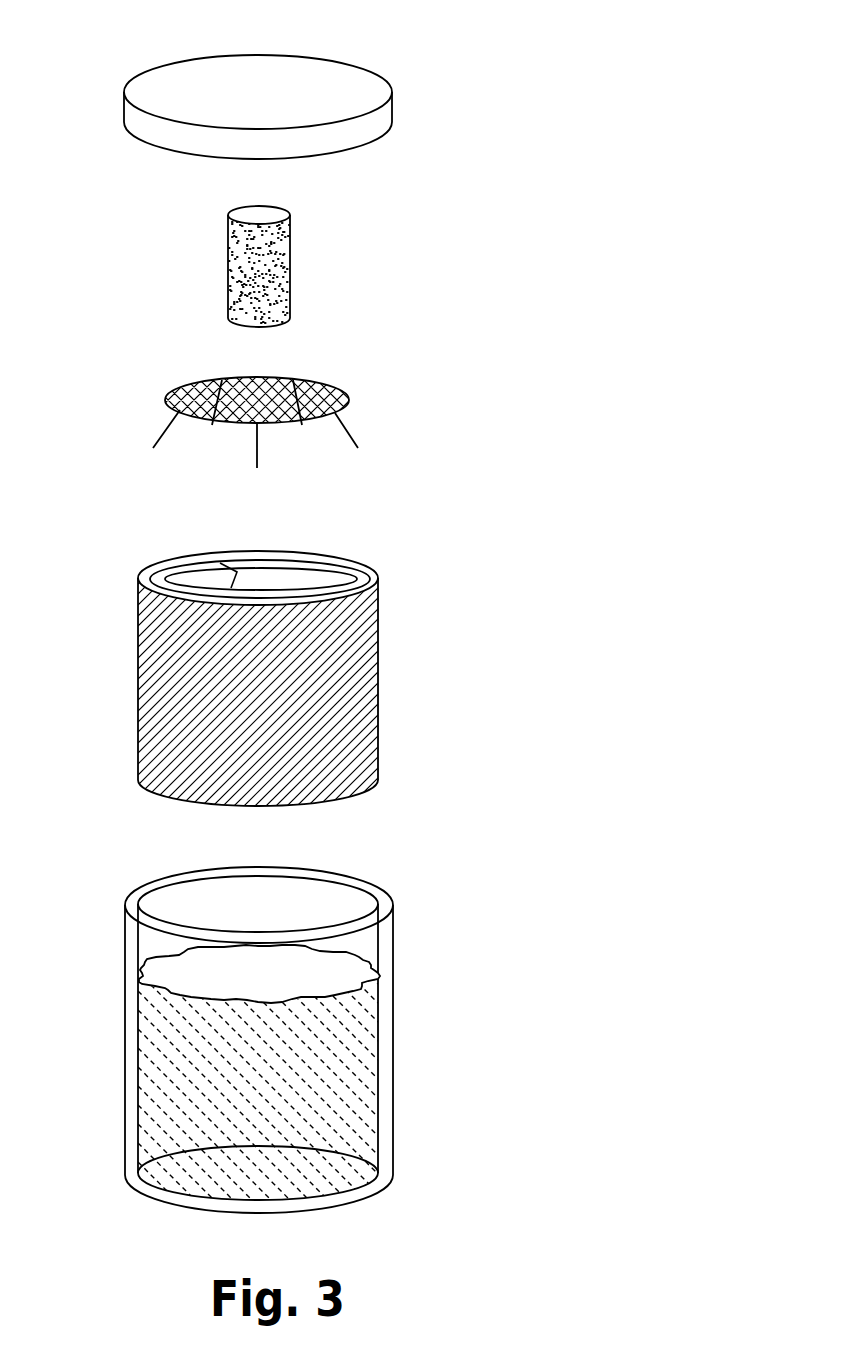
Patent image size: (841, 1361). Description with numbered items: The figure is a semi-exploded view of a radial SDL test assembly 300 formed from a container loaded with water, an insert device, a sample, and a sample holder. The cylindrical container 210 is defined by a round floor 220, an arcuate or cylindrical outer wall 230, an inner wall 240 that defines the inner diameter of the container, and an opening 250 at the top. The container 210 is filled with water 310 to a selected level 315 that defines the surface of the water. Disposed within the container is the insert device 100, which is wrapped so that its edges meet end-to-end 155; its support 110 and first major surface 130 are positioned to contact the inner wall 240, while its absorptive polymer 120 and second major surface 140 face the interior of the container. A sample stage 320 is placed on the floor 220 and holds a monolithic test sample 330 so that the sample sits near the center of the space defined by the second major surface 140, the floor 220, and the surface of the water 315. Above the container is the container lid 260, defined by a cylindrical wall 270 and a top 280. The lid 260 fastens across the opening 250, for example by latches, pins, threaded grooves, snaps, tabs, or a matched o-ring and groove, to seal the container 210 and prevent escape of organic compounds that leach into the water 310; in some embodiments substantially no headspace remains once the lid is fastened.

The insert device 100 is at (262, 647).
The support 110 is at (372, 570).
The absorptive polymer 120 is at (357, 572).
The first major surface 130 is at (364, 653).
The second major surface 140 is at (307, 580).
The end-to-end edges 155 is at (240, 572).
The cylindrical container 210 is at (258, 1042).
The round floor 220 is at (317, 1210).
The outer wall 230 is at (133, 897).
The inner wall 240 is at (157, 890).
The opening 250 is at (313, 905).
The container lid 260 is at (350, 128).
The cylindrical wall 270 is at (302, 105).
The top 280 is at (350, 86).
The test assembly 300 is at (468, 422).
The water 310 is at (360, 1025).
The water level 315 is at (352, 948).
The sample stage 320 is at (330, 382).
The monolithic test sample 330 is at (292, 268).